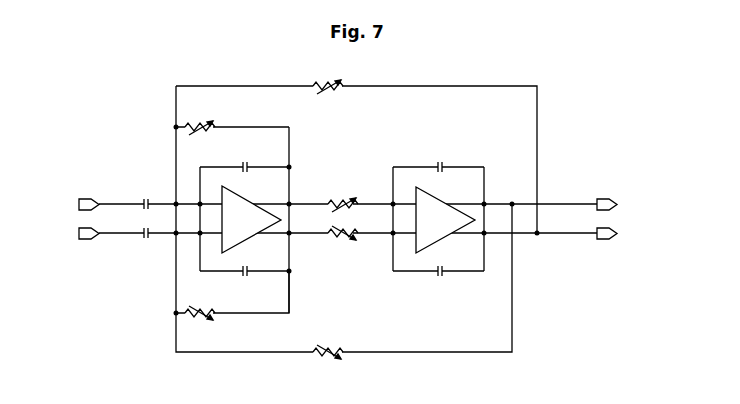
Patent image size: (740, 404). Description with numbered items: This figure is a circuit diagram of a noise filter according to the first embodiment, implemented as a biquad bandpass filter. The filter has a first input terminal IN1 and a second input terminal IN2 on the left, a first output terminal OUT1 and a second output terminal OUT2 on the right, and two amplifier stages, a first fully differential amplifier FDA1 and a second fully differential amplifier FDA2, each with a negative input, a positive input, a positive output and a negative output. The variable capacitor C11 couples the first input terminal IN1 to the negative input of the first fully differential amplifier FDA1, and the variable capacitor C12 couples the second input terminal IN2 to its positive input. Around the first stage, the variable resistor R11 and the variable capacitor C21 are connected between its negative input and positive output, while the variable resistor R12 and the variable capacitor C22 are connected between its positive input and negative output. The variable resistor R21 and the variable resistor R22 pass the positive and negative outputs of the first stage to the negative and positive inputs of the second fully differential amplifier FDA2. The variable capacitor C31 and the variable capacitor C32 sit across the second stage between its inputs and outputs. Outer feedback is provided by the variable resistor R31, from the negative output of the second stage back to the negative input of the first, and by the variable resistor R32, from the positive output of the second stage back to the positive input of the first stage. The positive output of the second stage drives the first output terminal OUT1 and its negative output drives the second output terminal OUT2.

The (1-1)th variable capacitor C11 is at (132, 198).
The (1-2)th variable capacitor C12 is at (132, 227).
The (2-1)th variable capacitor C21 is at (244, 160).
The (2-2)th variable capacitor C22 is at (244, 264).
The (3-1)th variable capacitor C31 is at (438, 160).
The (3-2)th variable capacitor C32 is at (438, 264).
The (1-1)th variable resistor R11 is at (232, 121).
The (1-2)th variable resistor R12 is at (232, 295).
The (2-1)th variable resistor R21 is at (343, 198).
The (2-2)th variable resistor R22 is at (343, 227).
The (3-1)th variable resistor R31 is at (328, 80).
The (3-2)th variable resistor R32 is at (328, 345).
The first fully differential amplifier FDA1 is at (238, 191).
The second fully differential amplifier FDA2 is at (432, 192).
The first input terminal IN1 is at (76, 205).
The second input terminal IN2 is at (76, 234).
The first output terminal OUT1 is at (627, 205).
The second output terminal OUT2 is at (627, 234).